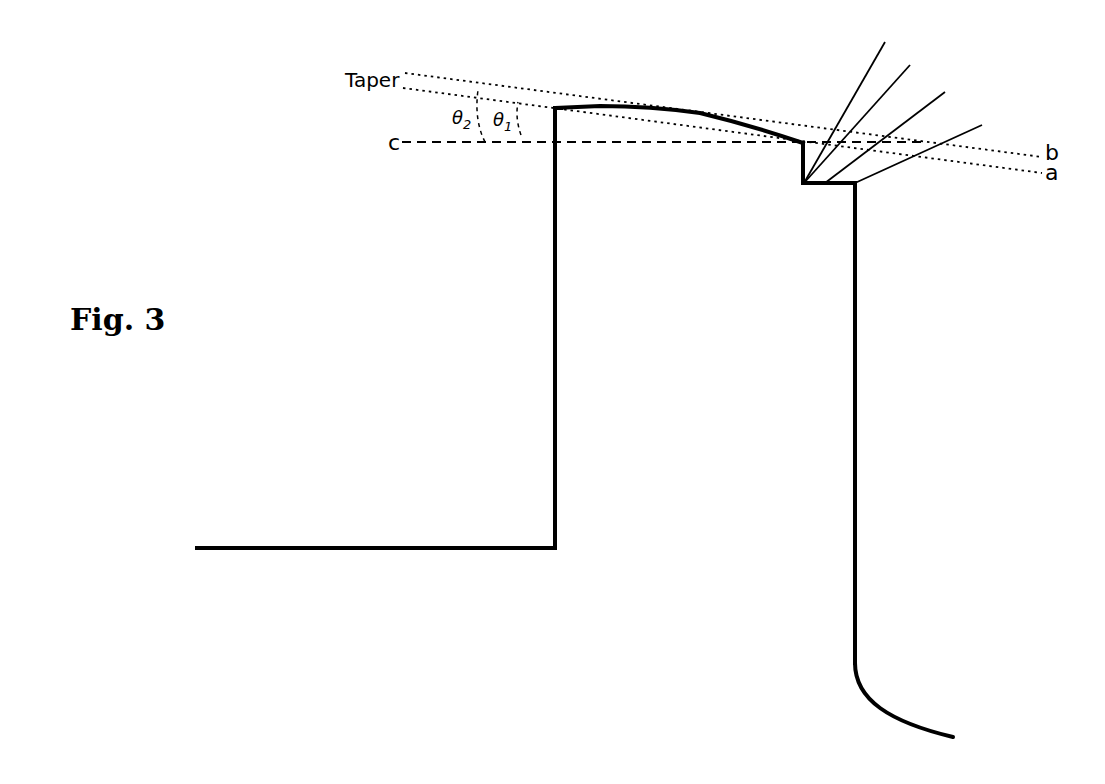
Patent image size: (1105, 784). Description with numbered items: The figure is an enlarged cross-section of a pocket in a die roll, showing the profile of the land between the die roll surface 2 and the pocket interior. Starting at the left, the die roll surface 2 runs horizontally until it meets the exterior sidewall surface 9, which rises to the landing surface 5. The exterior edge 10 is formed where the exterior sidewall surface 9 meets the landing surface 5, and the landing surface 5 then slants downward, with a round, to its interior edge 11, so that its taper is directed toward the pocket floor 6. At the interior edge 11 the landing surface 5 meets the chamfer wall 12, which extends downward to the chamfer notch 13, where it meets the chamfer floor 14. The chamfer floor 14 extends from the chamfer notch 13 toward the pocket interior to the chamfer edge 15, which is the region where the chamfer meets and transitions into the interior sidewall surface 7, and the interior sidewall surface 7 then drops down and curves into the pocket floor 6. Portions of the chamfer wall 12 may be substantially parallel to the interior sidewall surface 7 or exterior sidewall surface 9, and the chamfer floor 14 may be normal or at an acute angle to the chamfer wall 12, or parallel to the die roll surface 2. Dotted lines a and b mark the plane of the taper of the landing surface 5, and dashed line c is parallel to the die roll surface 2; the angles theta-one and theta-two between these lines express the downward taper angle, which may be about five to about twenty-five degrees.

The die roll surface 2 is at (333, 547).
The landing surface 5 is at (692, 80).
The pocket floor 6 is at (913, 722).
The interior sidewall surface 7 is at (857, 372).
The exterior sidewall surface 9 is at (553, 340).
The exterior edge 10 is at (555, 106).
The interior edge 11 is at (803, 141).
The chamfer wall 12 is at (857, 100).
The chamfer notch 13 is at (872, 113).
The chamfer floor 14 is at (903, 129).
The chamfer edge 15 is at (933, 143).